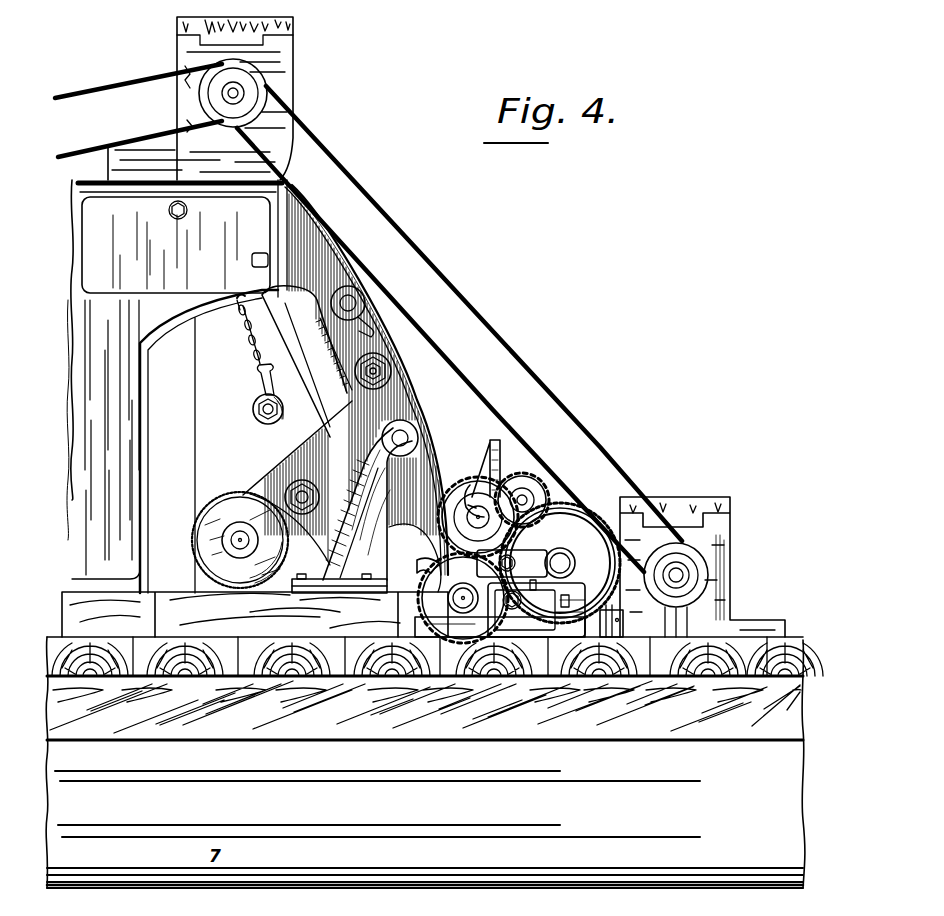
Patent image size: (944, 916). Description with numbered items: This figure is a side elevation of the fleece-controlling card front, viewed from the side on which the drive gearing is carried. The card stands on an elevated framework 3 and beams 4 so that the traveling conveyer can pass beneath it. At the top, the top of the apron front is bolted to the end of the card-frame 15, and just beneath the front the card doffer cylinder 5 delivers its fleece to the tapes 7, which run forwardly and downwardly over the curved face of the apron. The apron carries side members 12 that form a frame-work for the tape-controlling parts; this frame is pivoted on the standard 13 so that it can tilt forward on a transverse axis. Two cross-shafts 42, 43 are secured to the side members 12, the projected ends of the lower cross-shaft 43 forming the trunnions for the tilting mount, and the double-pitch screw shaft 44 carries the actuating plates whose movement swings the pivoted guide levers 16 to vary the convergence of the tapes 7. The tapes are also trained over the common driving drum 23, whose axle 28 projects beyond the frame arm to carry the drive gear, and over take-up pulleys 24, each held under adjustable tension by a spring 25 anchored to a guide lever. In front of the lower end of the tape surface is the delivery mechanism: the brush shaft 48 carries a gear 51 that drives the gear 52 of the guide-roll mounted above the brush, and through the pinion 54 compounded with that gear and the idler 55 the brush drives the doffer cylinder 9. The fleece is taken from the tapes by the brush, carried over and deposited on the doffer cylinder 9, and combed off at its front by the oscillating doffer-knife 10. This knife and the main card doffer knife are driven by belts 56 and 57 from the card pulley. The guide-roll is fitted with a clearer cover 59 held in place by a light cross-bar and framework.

The framework 3 is at (425, 710).
The beams 4 is at (425, 829).
The doffer cylinder 5 is at (436, 269).
The tapes 7 is at (195, 362).
The doffer cylinder 9 is at (570, 506).
The oscillating doffer-knife 10 is at (618, 547).
The side members 12 is at (320, 262).
The standard 13 is at (363, 510).
The card-frame 15 is at (255, 212).
The guide levers 16 is at (290, 337).
The driving drum 23 is at (234, 497).
The take-up pulleys 24 is at (253, 413).
The spring 25 is at (237, 317).
The axle 28 is at (238, 541).
The cross-shaft 42 is at (351, 303).
The cross-shaft 43 is at (403, 438).
The double-pitch screw shaft 44 is at (400, 353).
The brush shaft 48 is at (467, 607).
The gear 51 is at (440, 608).
The gear 52 is at (458, 492).
The pinion 54 is at (472, 493).
The idler 55 is at (527, 497).
The belt 56 is at (453, 363).
The belt 57 is at (127, 100).
The clearer cover 59 is at (505, 440).